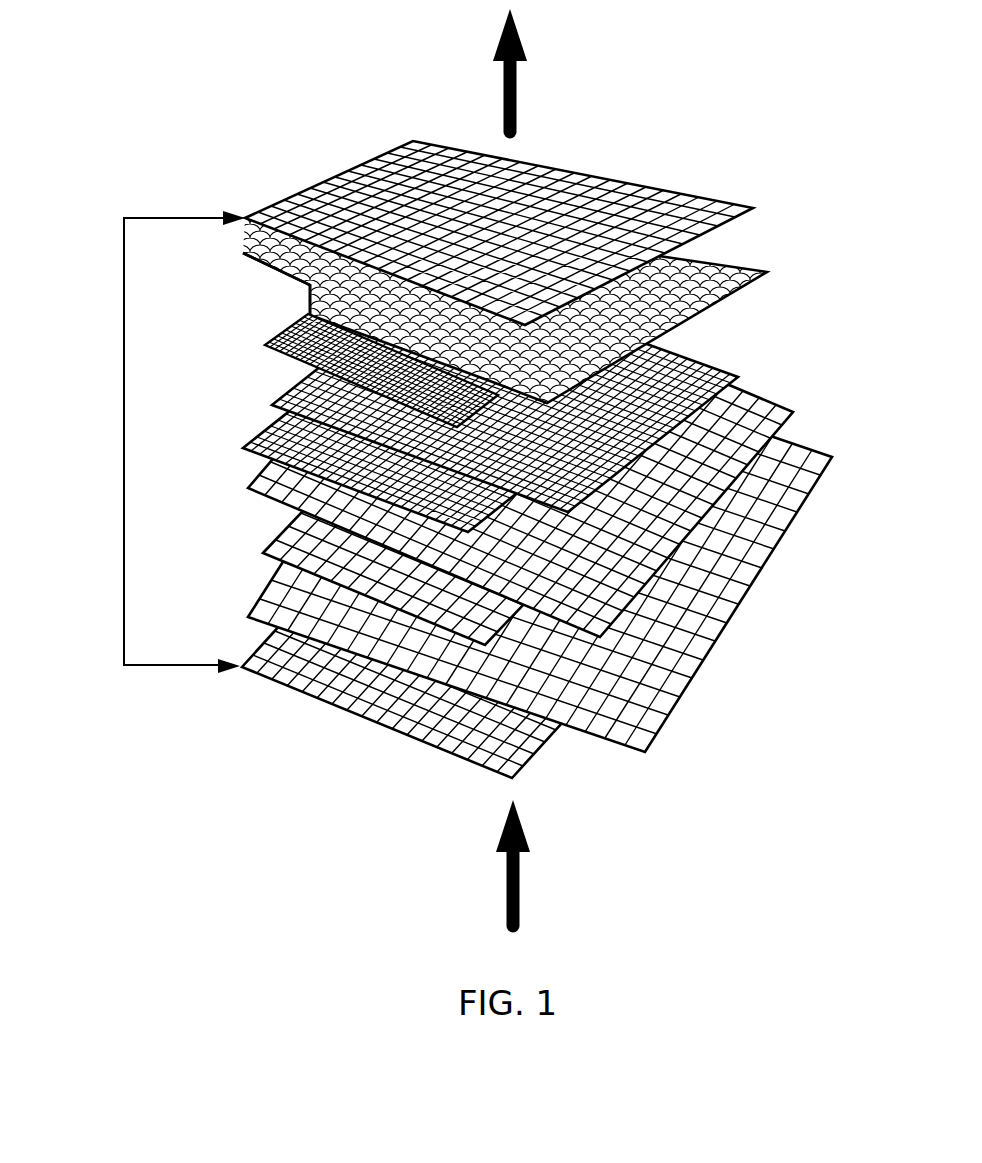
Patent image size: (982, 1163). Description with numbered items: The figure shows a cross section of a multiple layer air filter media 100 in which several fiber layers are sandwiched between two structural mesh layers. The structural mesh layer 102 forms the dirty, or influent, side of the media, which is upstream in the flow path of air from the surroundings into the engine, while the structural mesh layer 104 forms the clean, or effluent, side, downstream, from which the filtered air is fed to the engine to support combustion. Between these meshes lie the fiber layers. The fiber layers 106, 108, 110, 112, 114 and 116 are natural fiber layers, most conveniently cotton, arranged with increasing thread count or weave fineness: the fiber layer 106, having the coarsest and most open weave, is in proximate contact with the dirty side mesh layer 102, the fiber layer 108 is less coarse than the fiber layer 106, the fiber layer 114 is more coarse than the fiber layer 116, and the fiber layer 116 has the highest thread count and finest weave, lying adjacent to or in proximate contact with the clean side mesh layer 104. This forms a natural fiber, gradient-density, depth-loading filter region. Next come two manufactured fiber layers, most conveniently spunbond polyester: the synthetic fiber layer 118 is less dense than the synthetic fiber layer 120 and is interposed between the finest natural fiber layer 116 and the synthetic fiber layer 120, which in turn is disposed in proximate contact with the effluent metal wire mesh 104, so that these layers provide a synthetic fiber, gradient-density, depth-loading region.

The multiple layer air filter media 100 is at (124, 427).
The structural mesh layer 102 is at (333, 709).
The structural mesh layer 104 is at (316, 187).
The fiber layer 106 is at (722, 638).
The fiber layer 108 is at (281, 538).
The fiber layer 110 is at (762, 398).
The fiber layer 112 is at (262, 440).
The fiber layer 114 is at (697, 361).
The fiber layer 116 is at (281, 338).
The synthetic fiber layer 118 is at (742, 250).
The synthetic fiber layer 120 is at (246, 256).